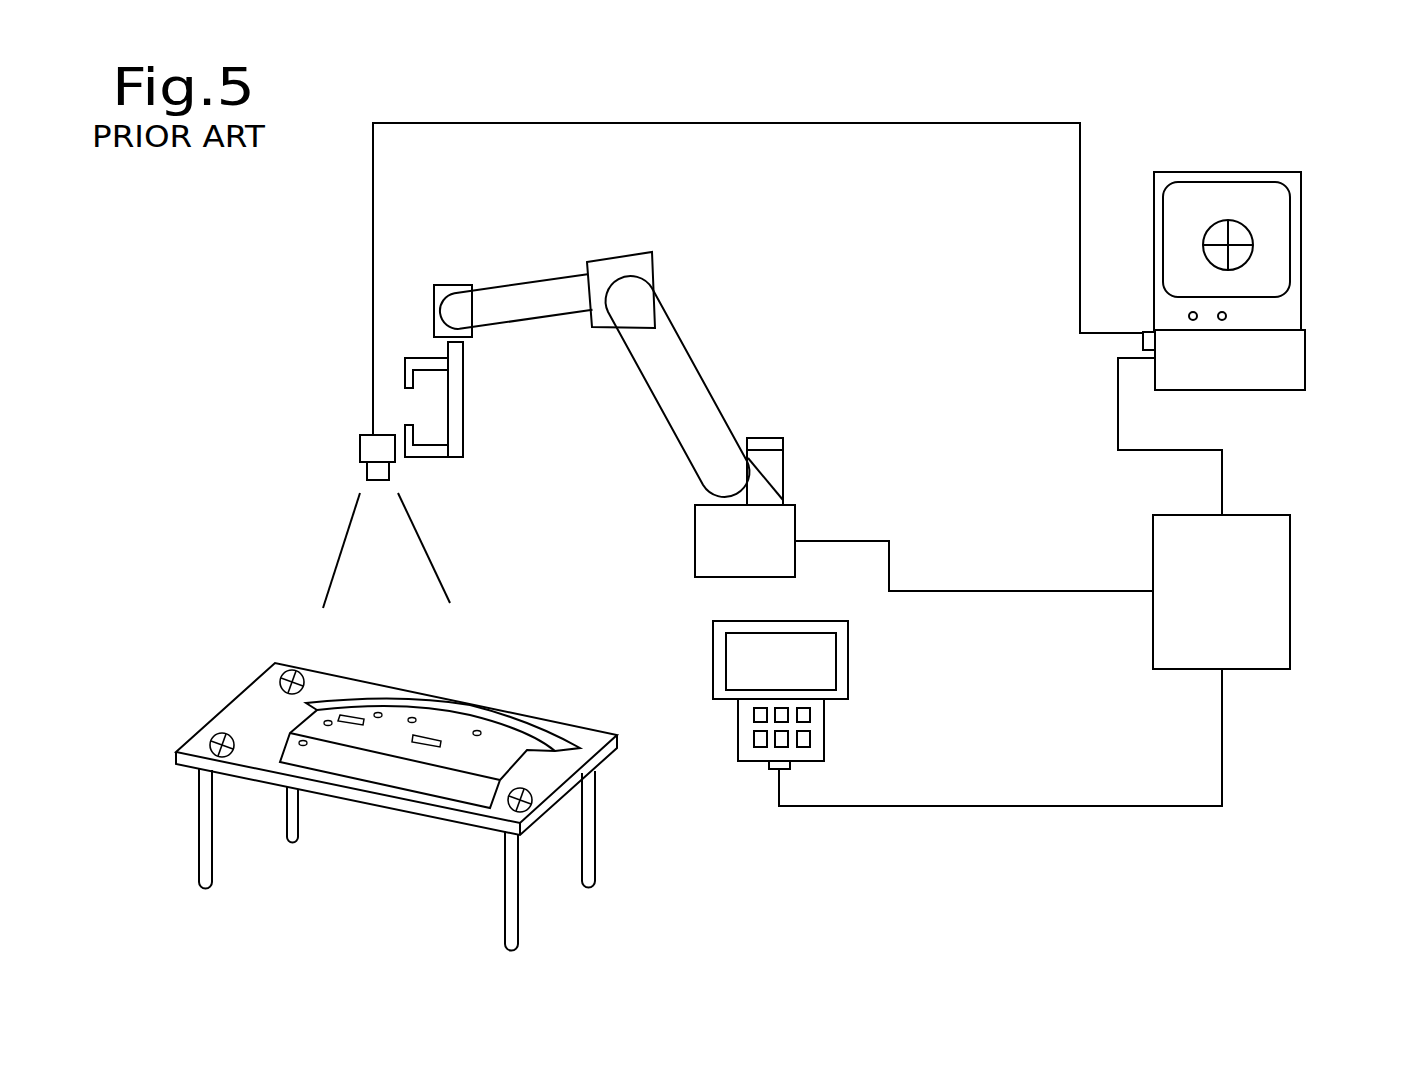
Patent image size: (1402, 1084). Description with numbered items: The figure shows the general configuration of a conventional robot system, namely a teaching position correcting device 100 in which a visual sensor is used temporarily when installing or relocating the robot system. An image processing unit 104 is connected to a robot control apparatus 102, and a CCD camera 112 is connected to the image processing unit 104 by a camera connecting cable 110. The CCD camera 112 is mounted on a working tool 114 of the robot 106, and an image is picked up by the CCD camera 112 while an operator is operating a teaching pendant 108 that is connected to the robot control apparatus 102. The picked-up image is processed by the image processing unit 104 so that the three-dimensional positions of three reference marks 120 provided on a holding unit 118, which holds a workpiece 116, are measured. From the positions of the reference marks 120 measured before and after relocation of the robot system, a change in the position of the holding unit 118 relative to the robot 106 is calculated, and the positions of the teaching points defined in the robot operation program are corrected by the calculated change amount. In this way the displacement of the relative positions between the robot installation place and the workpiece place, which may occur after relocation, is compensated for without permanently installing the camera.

The teaching position correcting device 100 is at (1336, 230).
The robot control apparatus 102 is at (1290, 588).
The image processing unit 104 is at (1301, 262).
The robot 106 is at (628, 252).
The teaching pendant 108 is at (848, 658).
The camera connecting cable 110 is at (697, 122).
The CCD camera 112 is at (360, 450).
The working tool 114 is at (463, 400).
The workpiece 116 is at (443, 723).
The holding unit 118 is at (365, 800).
The reference marks 120 is at (297, 678).